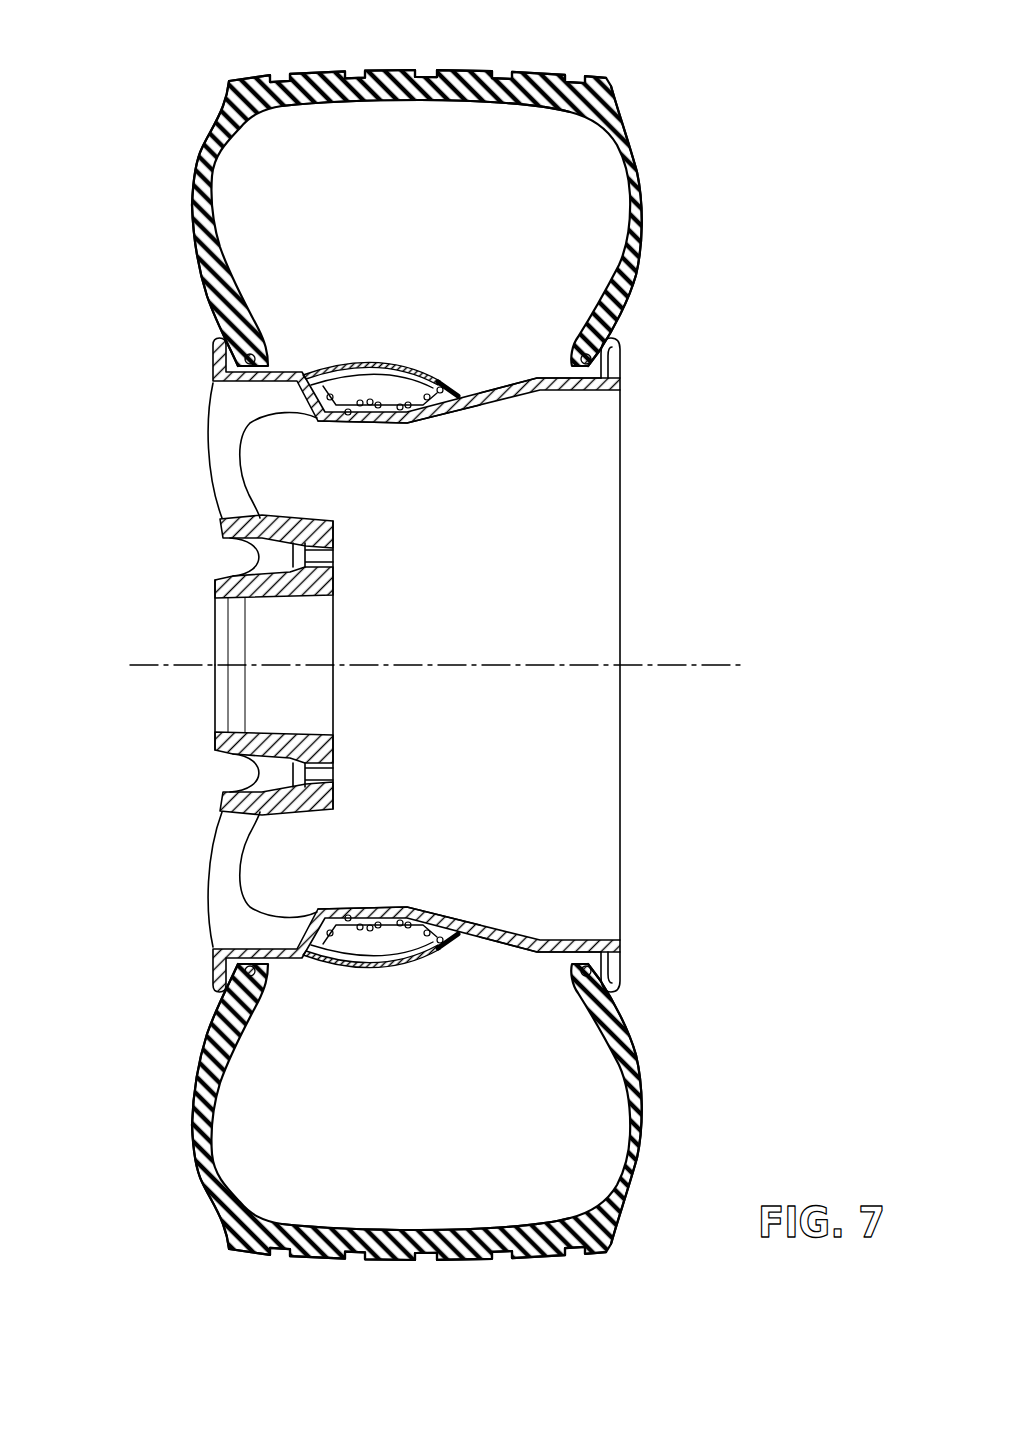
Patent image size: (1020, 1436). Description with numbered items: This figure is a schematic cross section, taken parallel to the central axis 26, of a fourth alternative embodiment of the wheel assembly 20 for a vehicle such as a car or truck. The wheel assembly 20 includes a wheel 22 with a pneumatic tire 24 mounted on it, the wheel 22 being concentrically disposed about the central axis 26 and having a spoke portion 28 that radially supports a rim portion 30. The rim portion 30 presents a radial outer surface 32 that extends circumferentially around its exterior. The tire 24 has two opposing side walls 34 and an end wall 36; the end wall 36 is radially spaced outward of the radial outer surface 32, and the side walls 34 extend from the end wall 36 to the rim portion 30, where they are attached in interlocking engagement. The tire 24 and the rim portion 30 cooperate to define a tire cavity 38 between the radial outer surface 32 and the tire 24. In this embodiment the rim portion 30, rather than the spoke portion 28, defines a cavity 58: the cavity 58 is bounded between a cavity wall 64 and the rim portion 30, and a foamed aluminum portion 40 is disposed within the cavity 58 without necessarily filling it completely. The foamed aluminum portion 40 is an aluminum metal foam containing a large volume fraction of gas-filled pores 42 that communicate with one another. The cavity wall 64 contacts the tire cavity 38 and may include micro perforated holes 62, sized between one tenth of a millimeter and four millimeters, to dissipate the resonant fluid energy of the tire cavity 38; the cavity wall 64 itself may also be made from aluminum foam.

The wheel assembly 20 is at (688, 78).
The wheel 22 is at (205, 495).
The pneumatic tire 24 is at (652, 158).
The central axis 26 is at (718, 662).
The spoke portion 28 is at (220, 422).
The rim portion 30 is at (563, 391).
The radial outer surface 32 is at (553, 370).
The side walls 34 is at (191, 200).
The end wall 36 is at (480, 68).
The tire cavity 38 is at (400, 224).
The foamed aluminum portion 40 is at (407, 415).
The pores 42 is at (362, 407).
The cavity 58 is at (383, 390).
The micro perforated holes 62 is at (415, 364).
The cavity wall 64 is at (457, 386).